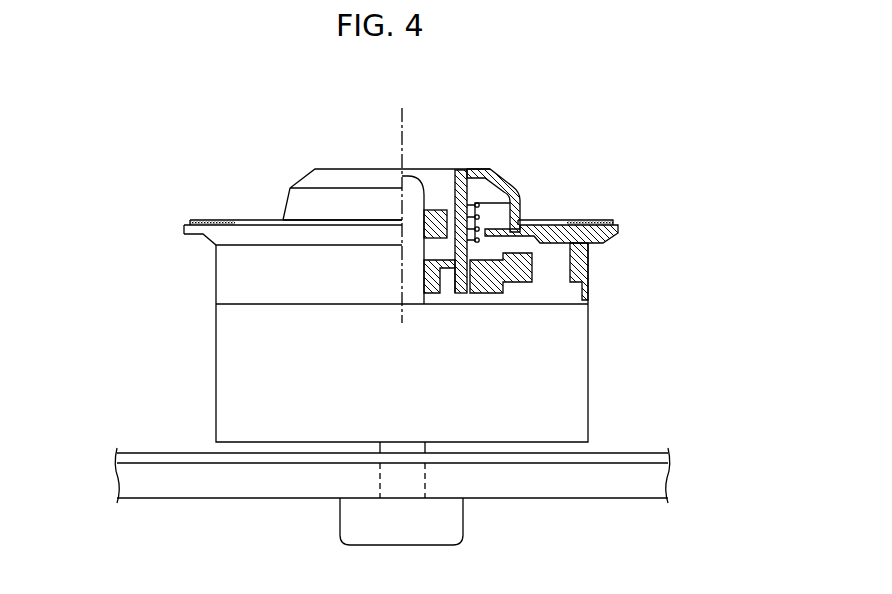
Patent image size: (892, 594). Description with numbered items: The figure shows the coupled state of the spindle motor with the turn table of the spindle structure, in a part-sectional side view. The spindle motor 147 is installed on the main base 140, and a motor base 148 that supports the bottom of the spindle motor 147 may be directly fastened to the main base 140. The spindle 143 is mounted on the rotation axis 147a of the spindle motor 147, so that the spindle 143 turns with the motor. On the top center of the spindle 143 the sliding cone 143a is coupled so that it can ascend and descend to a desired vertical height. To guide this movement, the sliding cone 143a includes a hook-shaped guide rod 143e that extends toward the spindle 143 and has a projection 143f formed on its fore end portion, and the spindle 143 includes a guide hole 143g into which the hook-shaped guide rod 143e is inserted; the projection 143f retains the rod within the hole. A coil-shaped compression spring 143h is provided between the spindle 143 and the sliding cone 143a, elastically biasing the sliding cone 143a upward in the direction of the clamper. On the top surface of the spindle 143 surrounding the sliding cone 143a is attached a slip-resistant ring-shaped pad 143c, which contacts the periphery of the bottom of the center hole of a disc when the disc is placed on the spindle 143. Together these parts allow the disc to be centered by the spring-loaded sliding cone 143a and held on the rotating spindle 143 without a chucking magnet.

The main base 140 is at (658, 483).
The spindle 143 is at (208, 268).
The sliding cone 143a is at (298, 175).
The slip-resistant ring-shaped pad 143c is at (595, 221).
The hook-shaped guide rod 143e is at (462, 197).
The projection 143f is at (452, 290).
The guide hole 143g is at (448, 285).
The coil-shaped compression spring 143h is at (490, 205).
The spindle motor 147 is at (584, 371).
The rotation axis 147a is at (417, 190).
The motor base 148 is at (670, 458).